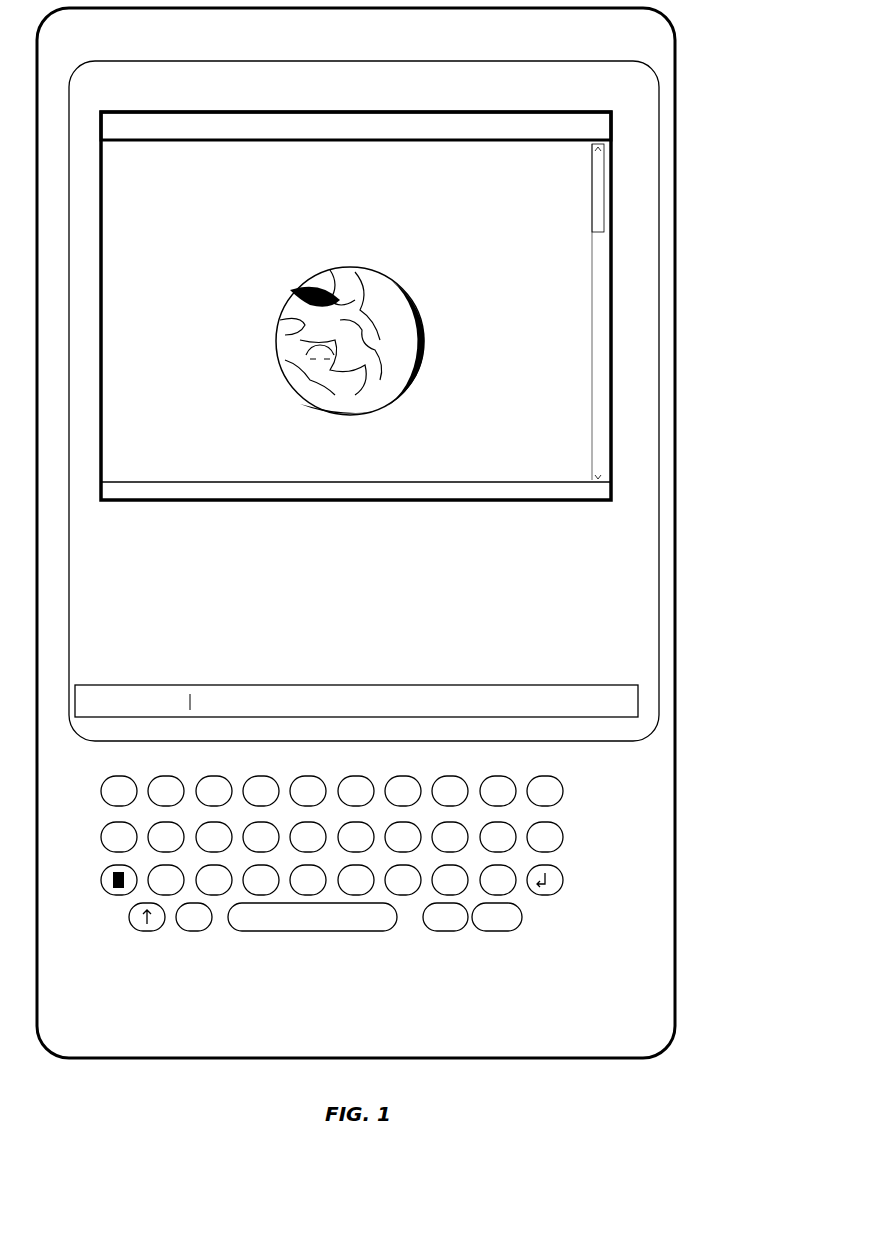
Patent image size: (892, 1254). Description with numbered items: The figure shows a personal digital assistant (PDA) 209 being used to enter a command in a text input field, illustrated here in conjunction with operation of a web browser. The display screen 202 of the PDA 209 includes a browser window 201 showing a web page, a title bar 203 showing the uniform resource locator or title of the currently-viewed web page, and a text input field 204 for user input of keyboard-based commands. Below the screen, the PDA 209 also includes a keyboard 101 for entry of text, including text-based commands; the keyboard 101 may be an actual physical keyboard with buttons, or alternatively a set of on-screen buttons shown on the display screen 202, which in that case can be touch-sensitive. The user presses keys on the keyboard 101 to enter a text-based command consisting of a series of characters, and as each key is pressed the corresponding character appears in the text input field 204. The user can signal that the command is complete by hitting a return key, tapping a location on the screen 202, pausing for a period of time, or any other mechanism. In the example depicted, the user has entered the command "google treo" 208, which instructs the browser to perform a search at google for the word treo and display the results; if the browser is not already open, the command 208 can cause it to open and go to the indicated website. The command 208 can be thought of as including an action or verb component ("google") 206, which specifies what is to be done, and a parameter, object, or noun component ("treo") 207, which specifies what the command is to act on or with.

The keyboard 101 is at (548, 917).
The browser window 201 is at (612, 465).
The display screen 202 is at (659, 528).
The title bar 203 is at (262, 111).
The text input field 204 is at (590, 683).
The verb component 206 is at (105, 690).
The noun component 207 is at (168, 690).
The command 208 is at (218, 702).
The personal digital assistant 209 is at (675, 851).